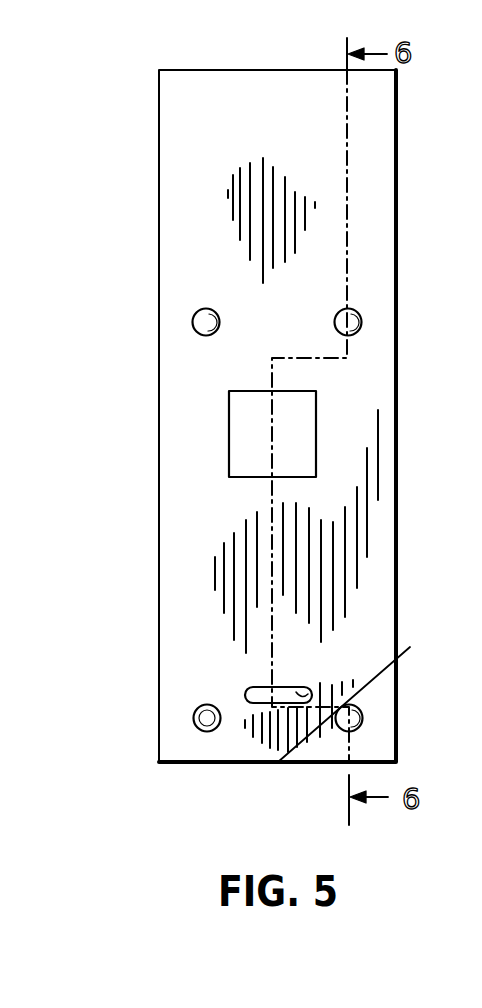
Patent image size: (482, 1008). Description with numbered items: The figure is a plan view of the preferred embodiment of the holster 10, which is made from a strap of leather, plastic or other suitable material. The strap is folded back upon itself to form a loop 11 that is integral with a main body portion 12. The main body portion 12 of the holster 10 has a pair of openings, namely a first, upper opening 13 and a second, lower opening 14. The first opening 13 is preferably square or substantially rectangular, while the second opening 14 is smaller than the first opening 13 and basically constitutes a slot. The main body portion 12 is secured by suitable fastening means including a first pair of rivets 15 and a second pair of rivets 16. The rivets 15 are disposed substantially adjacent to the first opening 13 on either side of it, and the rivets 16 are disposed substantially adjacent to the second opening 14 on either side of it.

The holster 10 is at (416, 424).
The loop 11 is at (206, 144).
The main body portion 12 is at (176, 560).
The first opening 13 is at (318, 412).
The second opening 14 is at (310, 696).
The first pair of rivets 15 is at (193, 322).
The second pair of rivets 16 is at (338, 722).